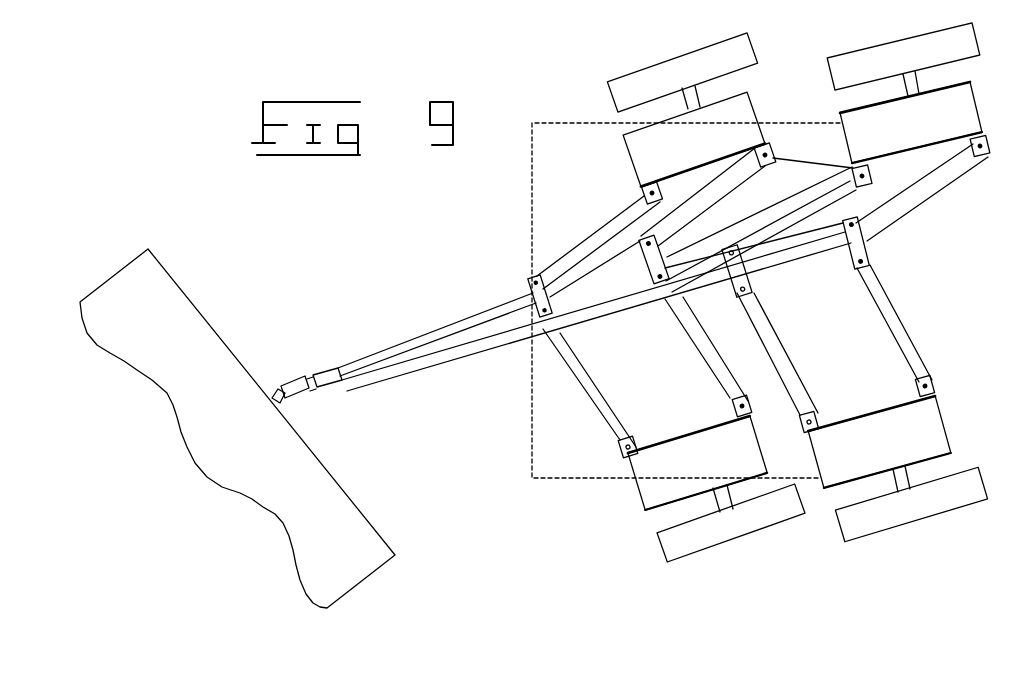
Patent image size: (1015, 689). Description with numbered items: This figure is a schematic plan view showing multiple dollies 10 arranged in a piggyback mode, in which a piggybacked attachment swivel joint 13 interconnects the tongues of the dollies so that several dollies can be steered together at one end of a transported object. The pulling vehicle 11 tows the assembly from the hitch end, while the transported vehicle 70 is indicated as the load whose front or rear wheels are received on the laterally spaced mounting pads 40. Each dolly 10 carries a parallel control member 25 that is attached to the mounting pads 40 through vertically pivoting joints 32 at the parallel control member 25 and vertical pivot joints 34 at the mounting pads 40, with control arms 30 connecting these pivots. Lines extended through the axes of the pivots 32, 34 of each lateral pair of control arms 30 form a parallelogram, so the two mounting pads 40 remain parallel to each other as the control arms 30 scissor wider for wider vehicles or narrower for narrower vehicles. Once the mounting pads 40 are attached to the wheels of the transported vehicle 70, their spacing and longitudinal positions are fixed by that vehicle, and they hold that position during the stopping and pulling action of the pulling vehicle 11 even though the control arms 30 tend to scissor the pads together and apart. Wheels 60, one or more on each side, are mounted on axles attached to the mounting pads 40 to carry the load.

The dolly 10 is at (454, 307).
The pulling vehicle 11 is at (320, 468).
The swivel joint 13 is at (313, 374).
The parallel control member 25 is at (645, 266).
The control arm 30 is at (887, 200).
The vertically pivoting joint 32 is at (723, 252).
The vertical pivot joint 34 is at (973, 140).
The mounting pad 40 is at (845, 125).
The wheel 60 is at (831, 73).
The transported vehicle 70 is at (532, 433).